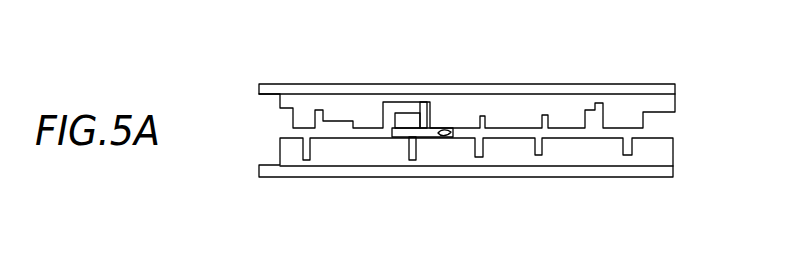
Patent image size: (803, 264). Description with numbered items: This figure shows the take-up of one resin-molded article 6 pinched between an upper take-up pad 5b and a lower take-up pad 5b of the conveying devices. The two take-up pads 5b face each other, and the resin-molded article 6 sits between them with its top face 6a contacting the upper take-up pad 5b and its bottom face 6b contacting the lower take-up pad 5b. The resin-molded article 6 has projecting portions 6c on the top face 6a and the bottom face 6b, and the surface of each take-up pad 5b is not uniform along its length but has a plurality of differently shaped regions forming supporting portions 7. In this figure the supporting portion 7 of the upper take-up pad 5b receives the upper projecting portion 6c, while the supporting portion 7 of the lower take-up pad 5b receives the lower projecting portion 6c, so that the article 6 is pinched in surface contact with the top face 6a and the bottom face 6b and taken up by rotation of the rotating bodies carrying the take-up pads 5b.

The take-up pad 5b is at (565, 110).
The resin-molded article 6 is at (417, 128).
The top face 6a is at (415, 108).
The bottom face 6b is at (407, 140).
The projecting portion 6c is at (430, 112).
The supporting portion 7 is at (440, 128).